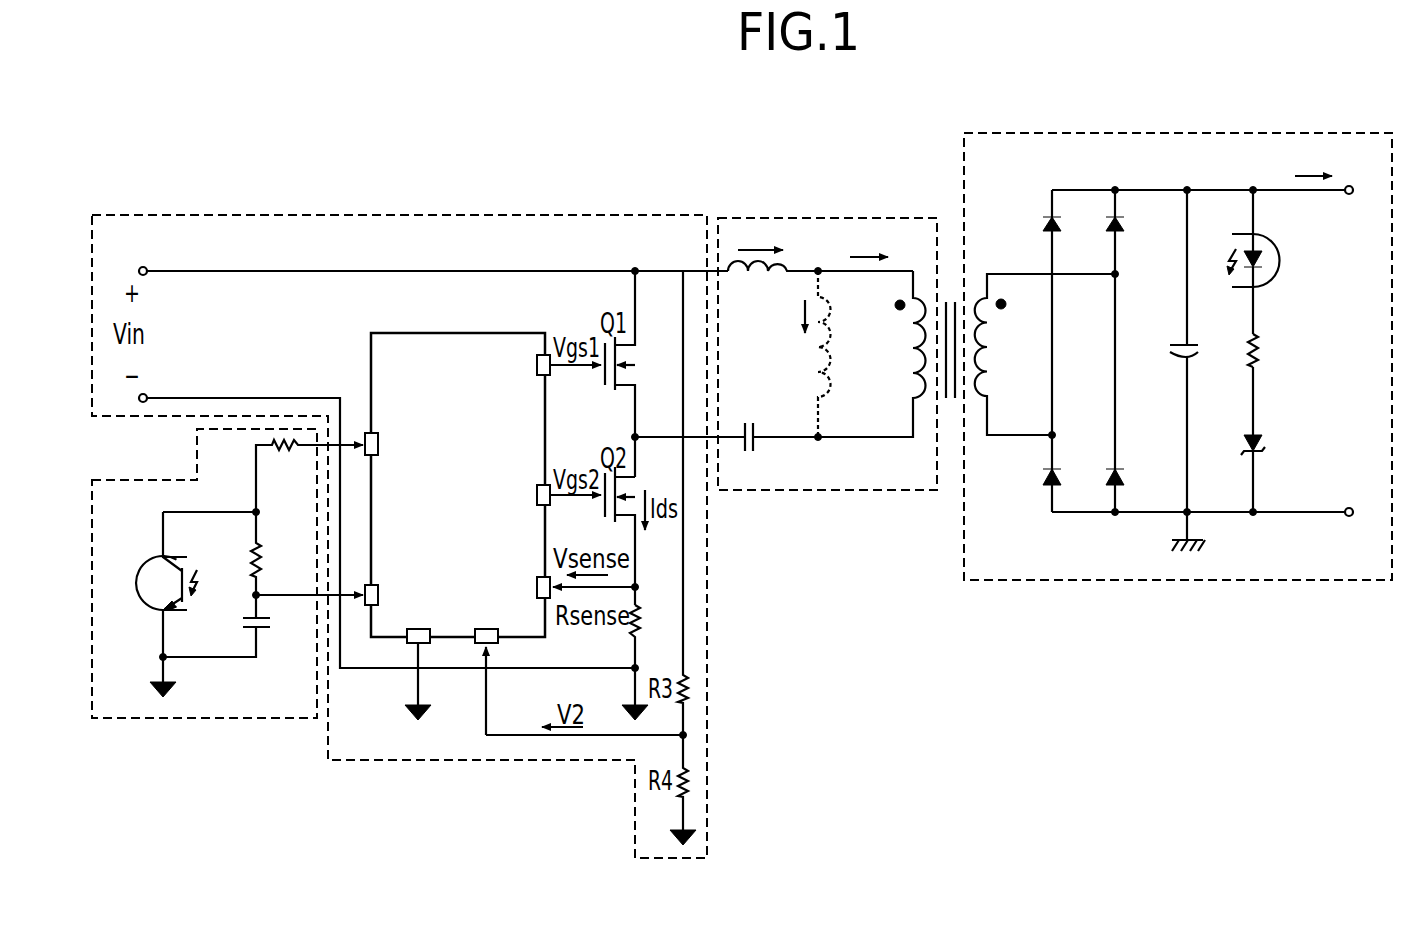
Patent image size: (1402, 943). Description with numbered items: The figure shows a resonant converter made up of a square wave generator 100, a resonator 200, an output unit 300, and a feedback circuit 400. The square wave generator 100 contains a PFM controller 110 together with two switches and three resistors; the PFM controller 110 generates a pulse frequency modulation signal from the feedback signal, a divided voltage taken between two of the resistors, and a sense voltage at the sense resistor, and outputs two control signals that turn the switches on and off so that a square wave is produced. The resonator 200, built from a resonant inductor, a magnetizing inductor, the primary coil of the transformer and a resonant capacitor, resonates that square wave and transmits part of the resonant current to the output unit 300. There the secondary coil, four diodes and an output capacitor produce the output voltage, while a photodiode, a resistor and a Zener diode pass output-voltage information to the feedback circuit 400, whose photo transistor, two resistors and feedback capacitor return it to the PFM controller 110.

The square wave generator 100 is at (412, 215).
The PFM controller 110 is at (405, 333).
The resonator 200 is at (827, 218).
The output unit 300 is at (1178, 133).
The feedback circuit 400 is at (145, 480).